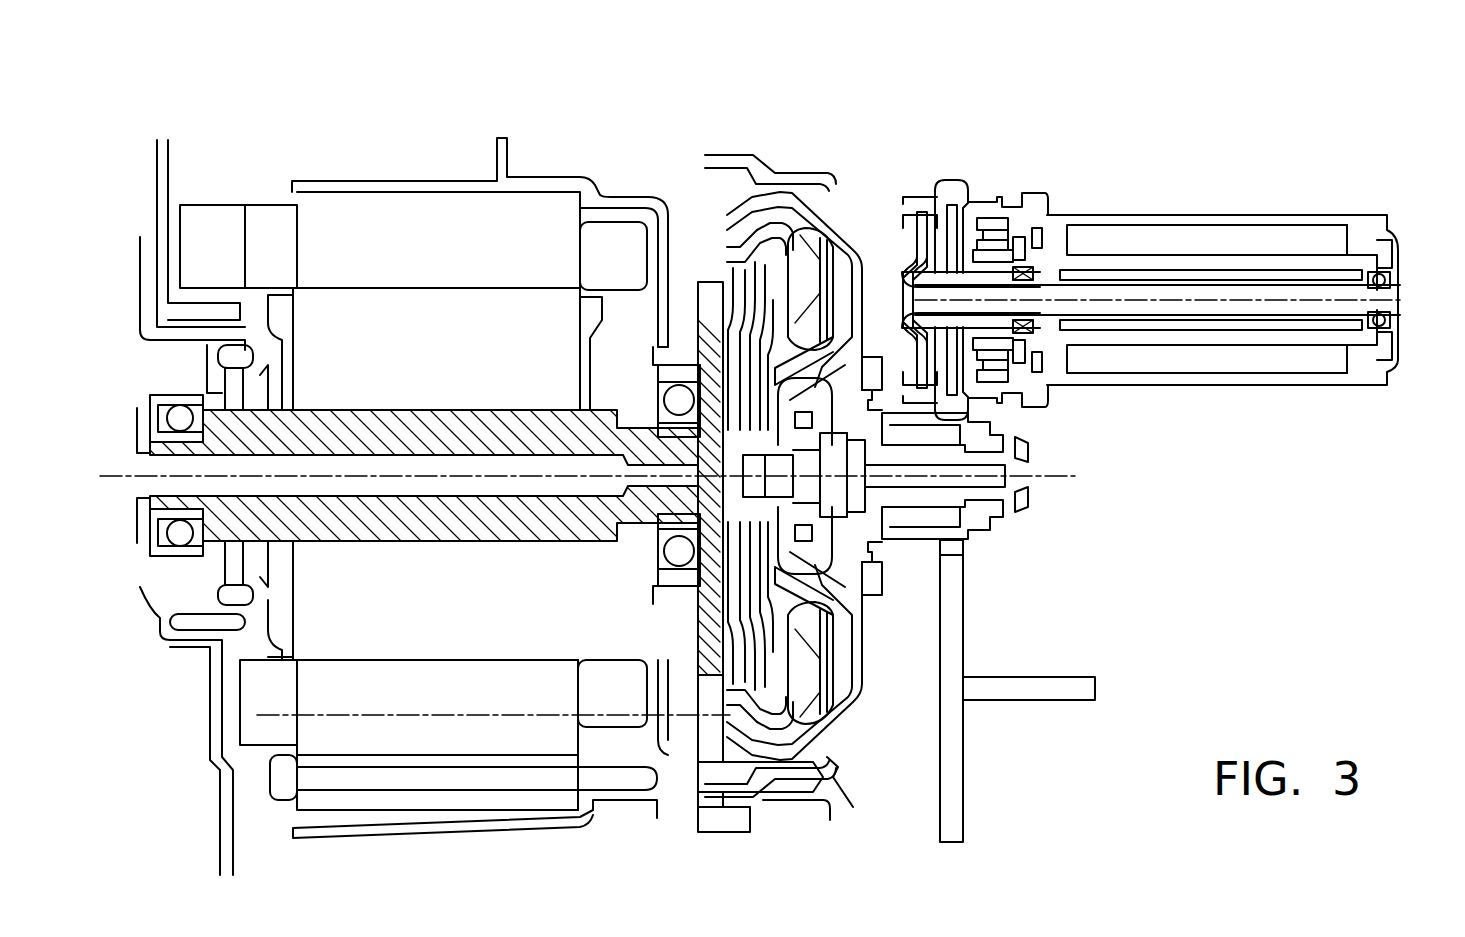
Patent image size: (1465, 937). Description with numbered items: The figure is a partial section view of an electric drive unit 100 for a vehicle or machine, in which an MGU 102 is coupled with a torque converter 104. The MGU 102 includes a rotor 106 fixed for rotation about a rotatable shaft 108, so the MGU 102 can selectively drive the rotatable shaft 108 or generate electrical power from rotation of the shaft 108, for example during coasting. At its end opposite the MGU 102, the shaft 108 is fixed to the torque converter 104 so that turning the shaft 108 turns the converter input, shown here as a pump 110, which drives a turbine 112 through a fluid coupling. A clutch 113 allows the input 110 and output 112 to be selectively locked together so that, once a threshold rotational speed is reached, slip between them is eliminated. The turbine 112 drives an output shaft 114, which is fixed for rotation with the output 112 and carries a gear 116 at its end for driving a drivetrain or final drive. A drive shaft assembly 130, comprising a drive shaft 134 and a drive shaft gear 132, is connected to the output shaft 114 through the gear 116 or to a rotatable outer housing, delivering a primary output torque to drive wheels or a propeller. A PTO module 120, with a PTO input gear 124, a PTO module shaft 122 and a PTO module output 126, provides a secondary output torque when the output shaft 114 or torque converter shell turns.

The electric drive unit 100 is at (801, 77).
The MGU 102 is at (132, 160).
The torque converter 104 is at (838, 218).
The rotor 106 is at (275, 222).
The rotatable shaft 108 is at (432, 535).
The pump 110 is at (843, 283).
The turbine 112 is at (823, 520).
The clutch 113 is at (758, 712).
The output shaft 114 is at (935, 455).
The gear 116 is at (915, 538).
The PTO module 120 is at (1190, 212).
The PTO module shaft 122 is at (1105, 292).
The PTO input gear 124 is at (970, 205).
The PTO module output 126 is at (1405, 205).
The drive shaft assembly 130 is at (965, 800).
The drive shaft gear 132 is at (963, 654).
The drive shaft 134 is at (1062, 703).